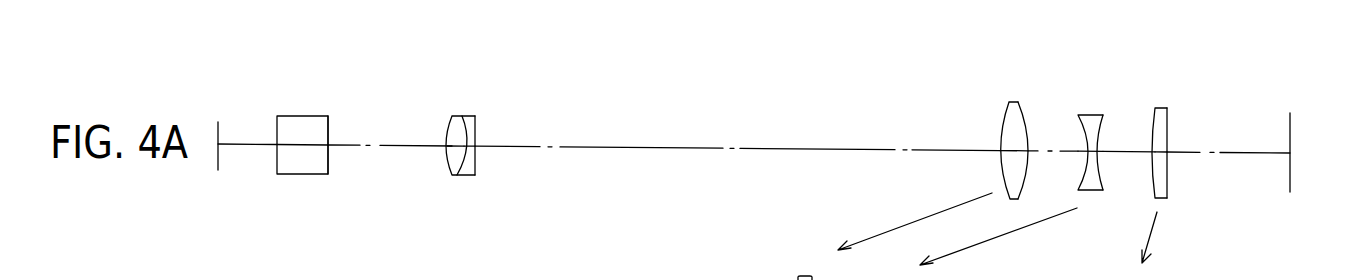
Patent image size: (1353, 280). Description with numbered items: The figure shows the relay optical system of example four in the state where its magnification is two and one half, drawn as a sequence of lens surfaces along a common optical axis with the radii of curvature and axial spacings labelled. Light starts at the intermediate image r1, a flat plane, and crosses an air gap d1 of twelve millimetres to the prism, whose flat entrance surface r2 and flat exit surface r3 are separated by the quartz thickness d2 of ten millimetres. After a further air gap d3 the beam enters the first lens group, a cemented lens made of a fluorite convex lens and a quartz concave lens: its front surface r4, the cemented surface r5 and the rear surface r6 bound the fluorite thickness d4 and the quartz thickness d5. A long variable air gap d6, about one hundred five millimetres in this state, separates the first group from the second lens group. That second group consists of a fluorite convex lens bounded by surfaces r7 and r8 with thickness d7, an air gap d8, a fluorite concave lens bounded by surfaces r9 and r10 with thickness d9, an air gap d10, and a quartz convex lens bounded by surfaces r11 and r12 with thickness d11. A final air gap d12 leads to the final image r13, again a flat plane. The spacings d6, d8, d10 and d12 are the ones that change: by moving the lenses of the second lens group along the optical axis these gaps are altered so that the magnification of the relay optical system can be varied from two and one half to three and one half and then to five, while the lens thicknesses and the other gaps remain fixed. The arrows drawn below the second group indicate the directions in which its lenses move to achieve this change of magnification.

The intermediate image surface r1 is at (218, 120).
The lens surface r2 is at (277, 118).
The lens surface r3 is at (330, 118).
The lens surface r4 is at (447, 122).
The lens surface r5 is at (464, 120).
The lens surface r6 is at (477, 122).
The lens surface r7 is at (1000, 117).
The lens surface r8 is at (1027, 113).
The lens surface r9 is at (1078, 125).
The lens surface r10 is at (1102, 137).
The lens surface r11 is at (1155, 130).
The lens surface r12 is at (1168, 130).
The final image surface r13 is at (1288, 127).
The air gap d1 is at (245, 145).
The lens thickness d2 is at (302, 146).
The air gap d3 is at (385, 146).
The lens thickness d4 is at (453, 146).
The lens thickness d5 is at (475, 162).
The air gap d6 is at (575, 148).
The lens thickness d7 is at (1008, 155).
The air gap d8 is at (1037, 155).
The lens thickness d9 is at (1093, 152).
The air gap d10 is at (1127, 157).
The lens thickness d11 is at (1168, 167).
The air gap d12 is at (1242, 153).